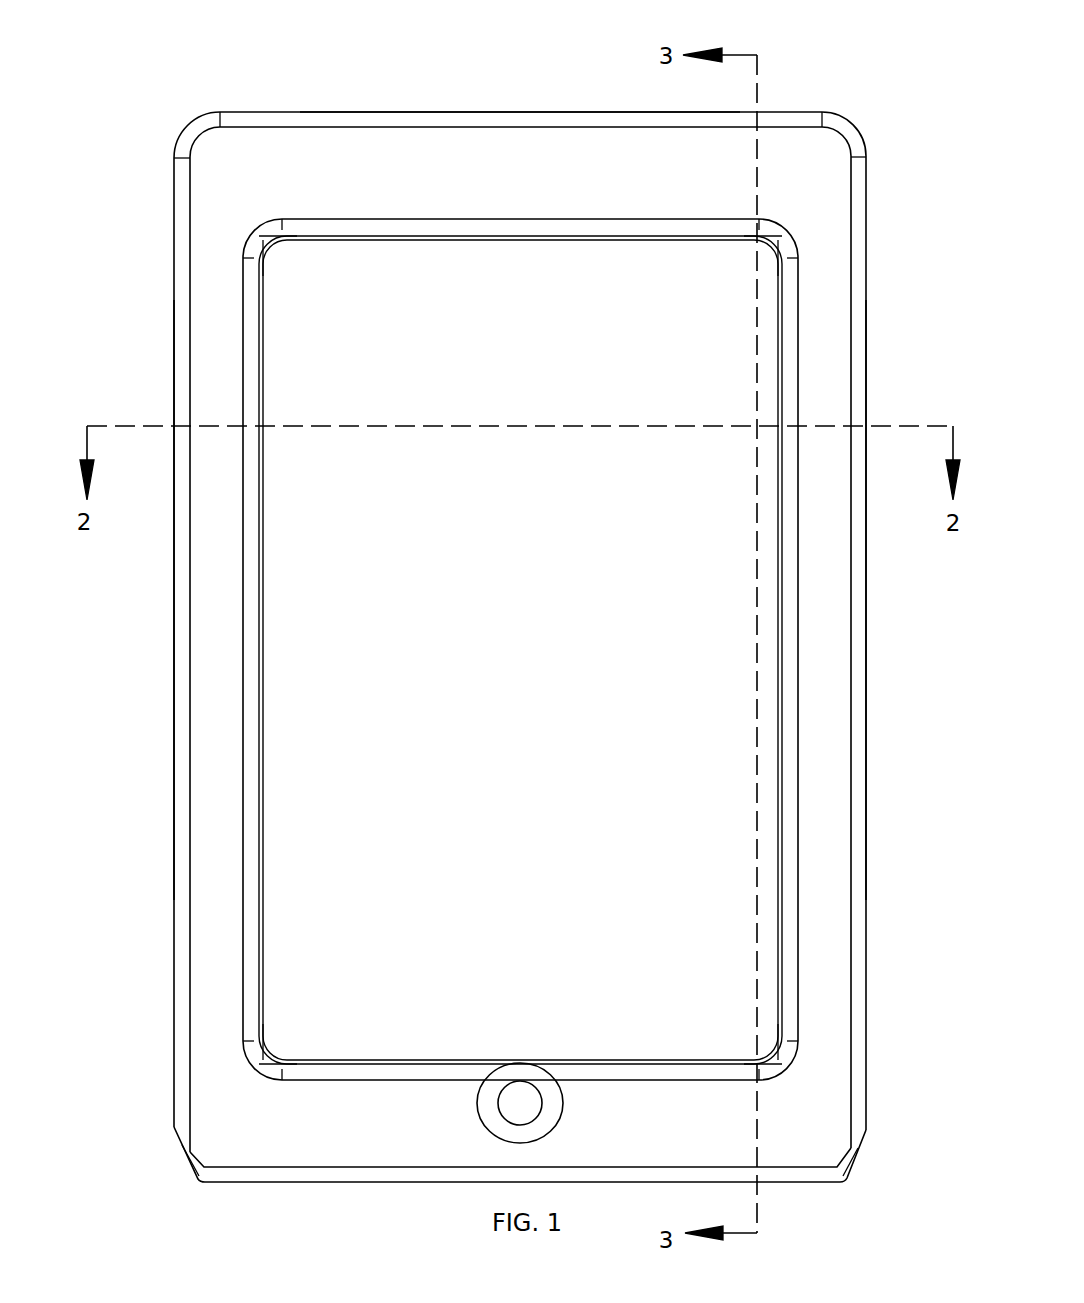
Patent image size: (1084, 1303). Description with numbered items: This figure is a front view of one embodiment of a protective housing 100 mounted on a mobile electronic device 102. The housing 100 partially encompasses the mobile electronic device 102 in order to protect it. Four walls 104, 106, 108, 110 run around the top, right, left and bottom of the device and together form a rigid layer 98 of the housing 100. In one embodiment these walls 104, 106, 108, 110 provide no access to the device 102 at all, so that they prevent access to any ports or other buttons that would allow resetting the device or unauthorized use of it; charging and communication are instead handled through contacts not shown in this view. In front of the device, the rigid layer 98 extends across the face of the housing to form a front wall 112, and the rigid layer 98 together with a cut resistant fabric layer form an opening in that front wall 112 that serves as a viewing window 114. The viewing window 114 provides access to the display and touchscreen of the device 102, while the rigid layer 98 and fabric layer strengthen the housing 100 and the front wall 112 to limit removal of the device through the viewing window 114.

The rigid layer 98 is at (827, 738).
The housing 100 is at (330, 170).
The mobile electronic device 102 is at (537, 568).
The wall 104 is at (479, 112).
The wall 106 is at (866, 222).
The wall 108 is at (174, 228).
The wall 110 is at (314, 1183).
The front wall 112 is at (218, 861).
The viewing window 114 is at (640, 862).